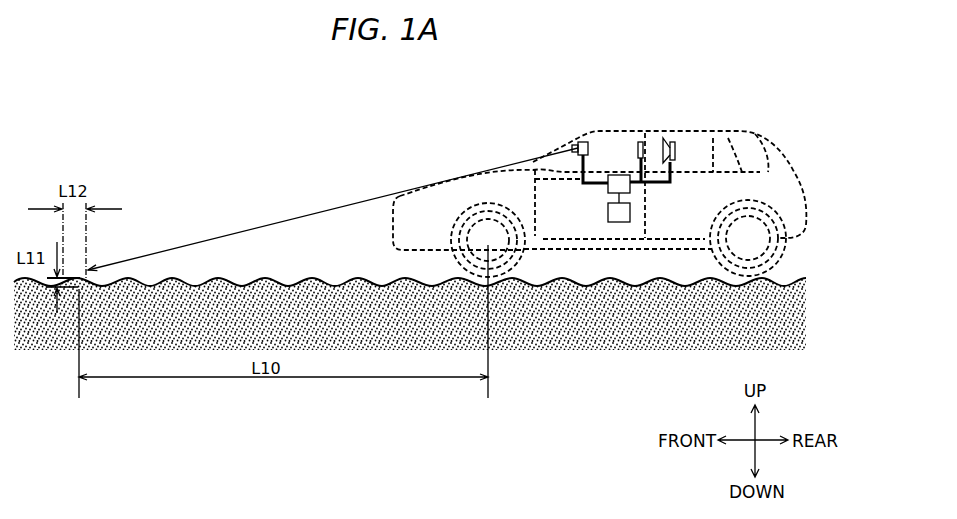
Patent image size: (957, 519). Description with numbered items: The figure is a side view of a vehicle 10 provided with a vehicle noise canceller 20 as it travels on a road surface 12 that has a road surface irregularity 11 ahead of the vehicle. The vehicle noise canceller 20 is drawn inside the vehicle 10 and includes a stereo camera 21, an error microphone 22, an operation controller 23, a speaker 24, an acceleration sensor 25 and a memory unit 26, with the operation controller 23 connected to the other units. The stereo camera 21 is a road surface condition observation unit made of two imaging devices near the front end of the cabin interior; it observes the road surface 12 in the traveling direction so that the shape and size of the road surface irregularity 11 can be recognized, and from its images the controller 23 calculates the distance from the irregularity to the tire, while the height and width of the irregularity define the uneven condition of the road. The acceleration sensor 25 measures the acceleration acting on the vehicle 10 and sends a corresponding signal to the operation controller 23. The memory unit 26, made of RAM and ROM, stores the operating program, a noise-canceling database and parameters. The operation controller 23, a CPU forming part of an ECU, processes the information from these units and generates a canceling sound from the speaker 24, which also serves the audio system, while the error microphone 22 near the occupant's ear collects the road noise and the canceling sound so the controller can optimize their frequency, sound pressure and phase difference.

The vehicle 10 is at (512, 118).
The road surface irregularity 11 is at (72, 289).
The road surface 12 is at (657, 320).
The vehicle noise canceller 20 is at (582, 97).
The stereo camera 21 is at (580, 141).
The error microphone 22 is at (641, 142).
The operation controller 23 is at (617, 175).
The speaker 24 is at (669, 138).
The acceleration sensor 25 is at (530, 242).
The memory unit 26 is at (618, 223).